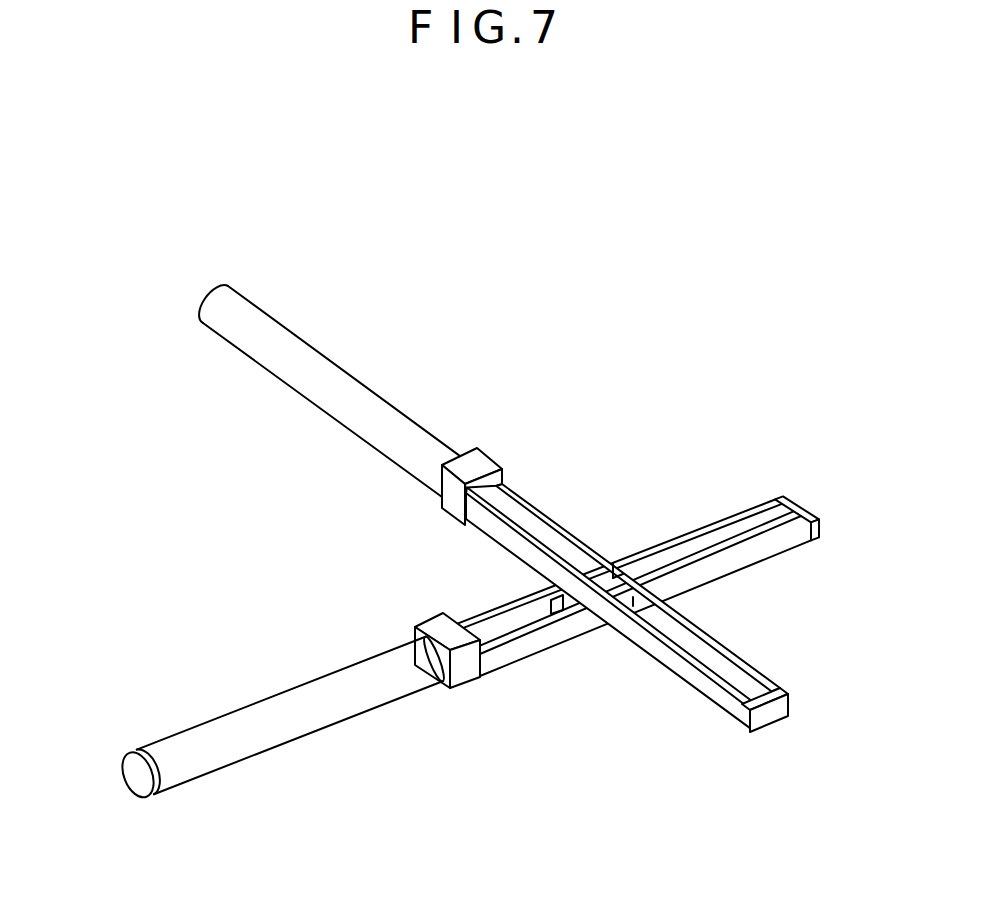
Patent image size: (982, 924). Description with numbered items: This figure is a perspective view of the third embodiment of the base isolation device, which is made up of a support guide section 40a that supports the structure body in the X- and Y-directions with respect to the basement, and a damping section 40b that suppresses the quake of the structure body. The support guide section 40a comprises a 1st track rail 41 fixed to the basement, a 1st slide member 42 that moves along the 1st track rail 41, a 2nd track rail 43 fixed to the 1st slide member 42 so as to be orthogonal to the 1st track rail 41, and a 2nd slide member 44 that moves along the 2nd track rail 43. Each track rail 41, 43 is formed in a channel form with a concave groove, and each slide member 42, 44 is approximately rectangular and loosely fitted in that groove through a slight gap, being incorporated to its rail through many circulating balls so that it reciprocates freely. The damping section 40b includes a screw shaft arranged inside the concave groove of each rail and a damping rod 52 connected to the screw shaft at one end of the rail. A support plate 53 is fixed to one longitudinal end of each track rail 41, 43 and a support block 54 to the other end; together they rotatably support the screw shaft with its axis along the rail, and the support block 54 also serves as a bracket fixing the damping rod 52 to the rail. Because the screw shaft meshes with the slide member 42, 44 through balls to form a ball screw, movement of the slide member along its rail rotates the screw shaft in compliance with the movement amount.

The support guide section 40a is at (623, 588).
The damping section 40b is at (469, 510).
The 1st track rail 41 is at (752, 553).
The 1st slide member 42 is at (562, 612).
The 2nd track rail 43 is at (689, 678).
The 2nd slide member 44 is at (614, 565).
The damping rod 52 is at (258, 704).
The support plate 53 is at (800, 503).
The support block 54 is at (436, 624).